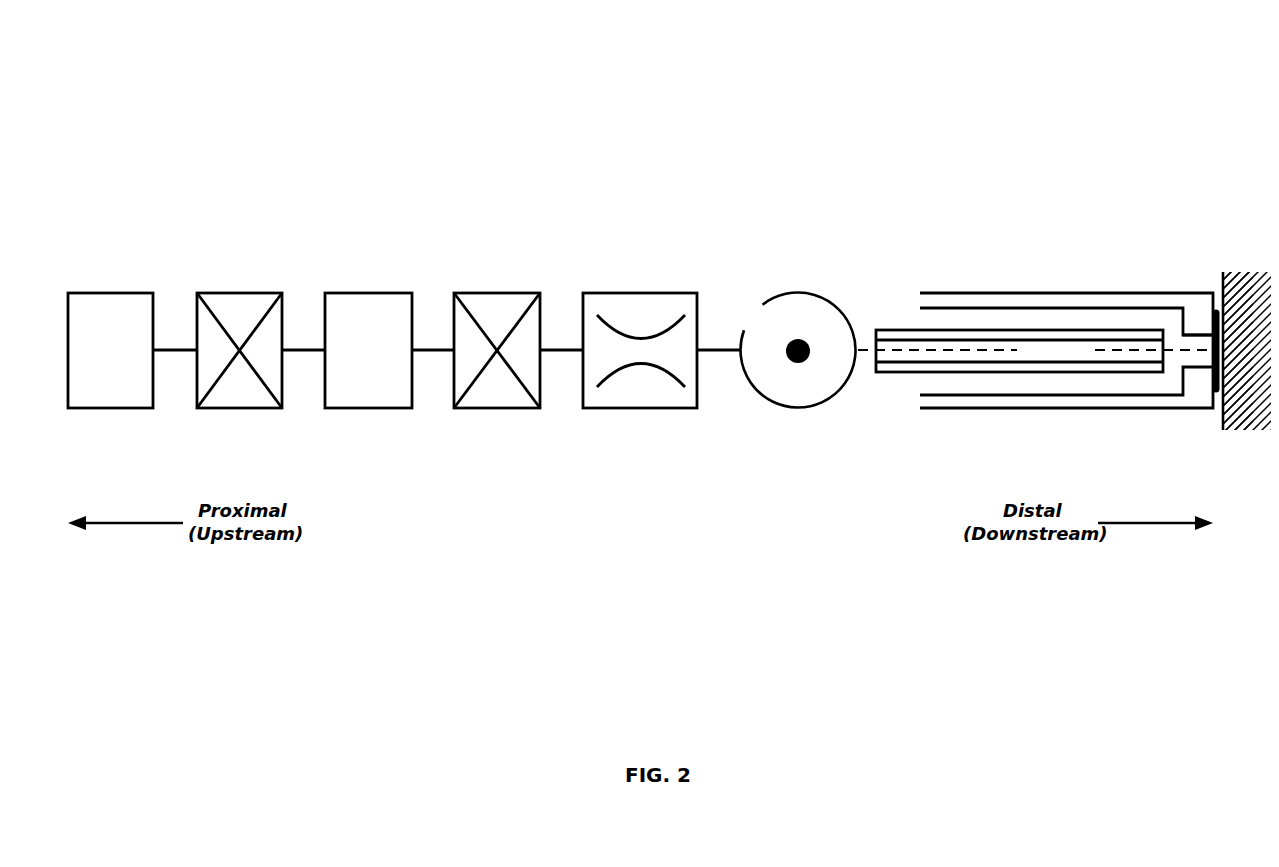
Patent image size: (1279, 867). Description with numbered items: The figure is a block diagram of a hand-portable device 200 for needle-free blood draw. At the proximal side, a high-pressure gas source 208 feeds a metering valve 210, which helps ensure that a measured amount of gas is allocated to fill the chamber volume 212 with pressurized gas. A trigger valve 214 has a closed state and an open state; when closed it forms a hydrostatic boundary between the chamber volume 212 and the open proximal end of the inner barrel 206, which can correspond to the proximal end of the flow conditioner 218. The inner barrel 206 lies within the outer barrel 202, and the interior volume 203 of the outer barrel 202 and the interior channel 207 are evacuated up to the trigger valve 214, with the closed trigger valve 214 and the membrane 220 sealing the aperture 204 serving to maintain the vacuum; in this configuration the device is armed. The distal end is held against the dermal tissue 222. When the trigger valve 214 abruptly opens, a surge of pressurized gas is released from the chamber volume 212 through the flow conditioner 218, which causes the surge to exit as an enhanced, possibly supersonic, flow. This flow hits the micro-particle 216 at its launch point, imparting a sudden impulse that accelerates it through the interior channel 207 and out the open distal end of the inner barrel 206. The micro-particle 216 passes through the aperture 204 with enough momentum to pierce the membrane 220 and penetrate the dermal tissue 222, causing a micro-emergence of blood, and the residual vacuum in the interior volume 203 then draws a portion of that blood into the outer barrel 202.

The hand-portable device 200 is at (238, 90).
The outer barrel 202 is at (1027, 293).
The interior volume 203 is at (1000, 379).
The aperture 204 is at (1200, 333).
The inner barrel 206 is at (909, 372).
The interior channel 207 is at (1055, 353).
The high-pressure gas source 208 is at (138, 293).
The metering valve 210 is at (268, 293).
The chamber volume 212 is at (397, 293).
The trigger valve 214 is at (527, 293).
The micro-particle 216 is at (798, 338).
The flow conditioner 218 is at (670, 293).
The membrane 220 is at (1218, 393).
The dermal tissue 222 is at (1253, 432).